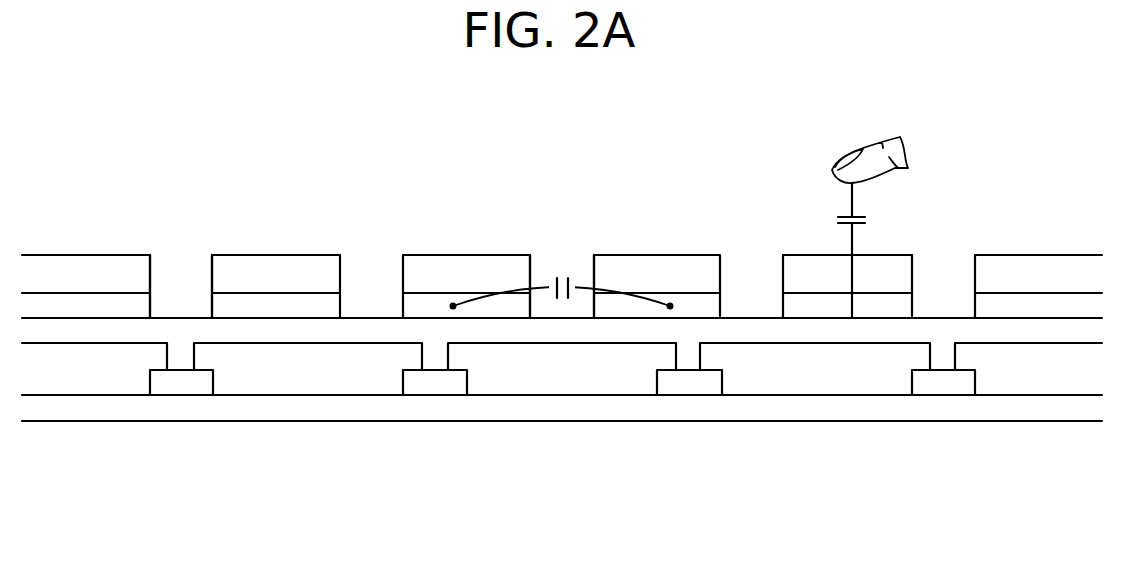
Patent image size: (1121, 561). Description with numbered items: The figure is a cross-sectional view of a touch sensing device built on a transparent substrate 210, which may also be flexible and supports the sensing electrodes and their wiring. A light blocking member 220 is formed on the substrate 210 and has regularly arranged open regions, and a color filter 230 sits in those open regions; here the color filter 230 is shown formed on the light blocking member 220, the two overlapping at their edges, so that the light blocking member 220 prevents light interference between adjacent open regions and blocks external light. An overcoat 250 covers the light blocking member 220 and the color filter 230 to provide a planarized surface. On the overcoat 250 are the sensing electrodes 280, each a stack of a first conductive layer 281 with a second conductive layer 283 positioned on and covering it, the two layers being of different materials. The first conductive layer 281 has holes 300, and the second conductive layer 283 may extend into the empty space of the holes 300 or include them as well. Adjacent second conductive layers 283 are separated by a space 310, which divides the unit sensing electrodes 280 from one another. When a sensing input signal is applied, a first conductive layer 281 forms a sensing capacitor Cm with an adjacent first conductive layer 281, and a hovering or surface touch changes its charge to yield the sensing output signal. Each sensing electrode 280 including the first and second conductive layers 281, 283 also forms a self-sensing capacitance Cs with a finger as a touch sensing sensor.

The substrate 210 is at (85, 405).
The light blocking member 220 is at (175, 385).
The color filter 230 is at (258, 363).
The overcoat 250 is at (567, 330).
The sensing electrode 280 is at (297, 478).
The first conductive layer 281 is at (440, 307).
The second conductive layer 283 is at (317, 280).
The hole 300 is at (178, 272).
The space 310 is at (585, 272).
The sensing capacitor Cm is at (562, 279).
The self-sensing capacitance Cs is at (870, 227).